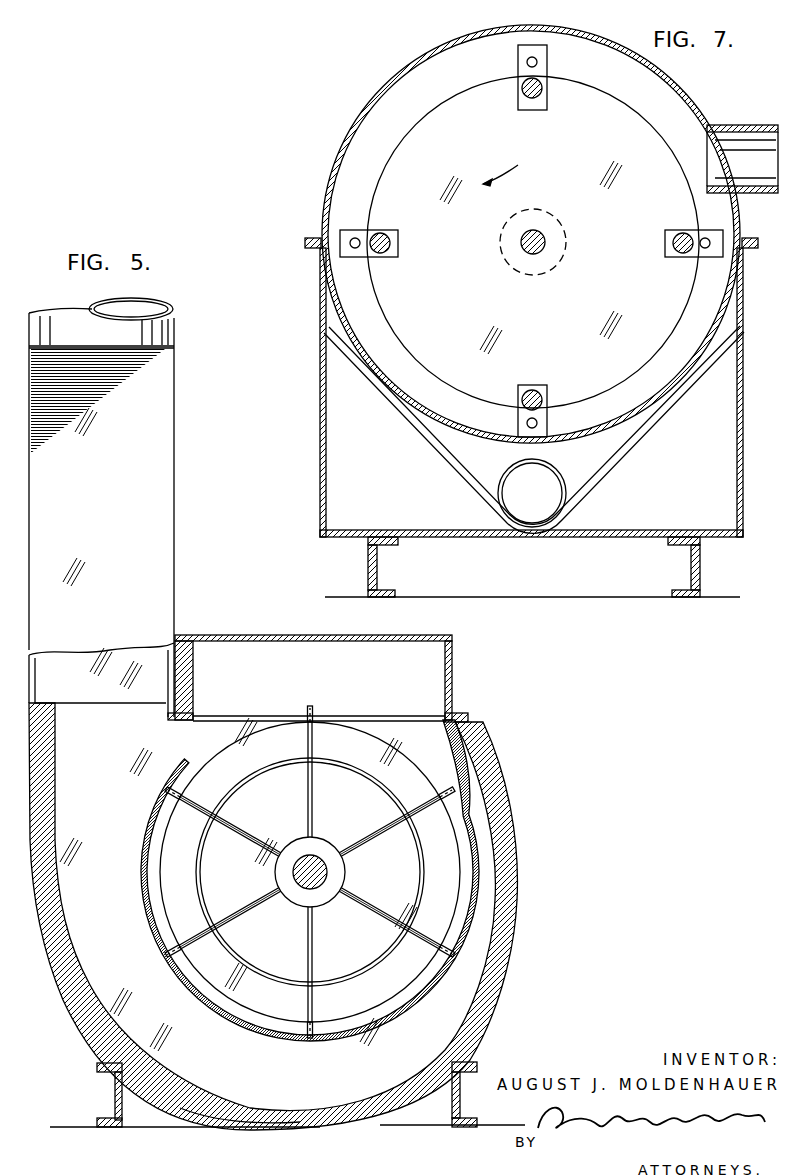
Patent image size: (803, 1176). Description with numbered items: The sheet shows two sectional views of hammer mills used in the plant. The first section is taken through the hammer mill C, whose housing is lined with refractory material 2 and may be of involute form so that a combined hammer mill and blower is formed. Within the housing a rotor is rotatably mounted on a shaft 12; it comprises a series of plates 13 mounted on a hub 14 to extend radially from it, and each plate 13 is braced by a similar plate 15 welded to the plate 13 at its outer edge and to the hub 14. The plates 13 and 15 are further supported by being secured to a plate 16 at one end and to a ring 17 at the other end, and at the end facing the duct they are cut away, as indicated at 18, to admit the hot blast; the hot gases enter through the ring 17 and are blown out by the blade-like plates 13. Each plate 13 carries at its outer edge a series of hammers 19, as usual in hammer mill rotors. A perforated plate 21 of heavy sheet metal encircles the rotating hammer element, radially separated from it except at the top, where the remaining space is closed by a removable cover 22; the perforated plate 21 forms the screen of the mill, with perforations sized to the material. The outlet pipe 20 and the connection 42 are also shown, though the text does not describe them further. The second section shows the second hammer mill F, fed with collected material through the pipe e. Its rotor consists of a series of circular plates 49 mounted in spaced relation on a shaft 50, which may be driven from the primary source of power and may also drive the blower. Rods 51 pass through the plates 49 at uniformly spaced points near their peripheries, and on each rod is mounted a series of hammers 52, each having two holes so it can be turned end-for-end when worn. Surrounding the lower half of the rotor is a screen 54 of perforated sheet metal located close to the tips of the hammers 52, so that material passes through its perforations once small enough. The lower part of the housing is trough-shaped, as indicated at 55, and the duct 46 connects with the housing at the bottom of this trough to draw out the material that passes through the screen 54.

In FIG. 5, the refractory material 2 is at (320, 1108).
In FIG. 5, the shaft 12 is at (306, 890).
In FIG. 5, the plates 13 is at (305, 818).
In FIG. 5, the hub 14 is at (330, 845).
In FIG. 5, the bracing plate 15 is at (298, 813).
In FIG. 5, the plate 16 is at (355, 782).
In FIG. 5, the ring 17 is at (242, 1000).
In FIG. 5, the cut-away portion 18 is at (335, 770).
In FIG. 5, the hammers 19 is at (318, 712).
In FIG. 5, the outlet pipe 20 is at (176, 326).
In FIG. 5, the perforated plate 21 is at (384, 1030).
In FIG. 5, the removable cover 22 is at (453, 666).
In FIG. 5, the hammer mill C is at (520, 880).
In FIG. 7, the inlet pipe 42 is at (734, 128).
In FIG. 7, the duct 46 is at (565, 486).
In FIG. 7, the circular plates 49 is at (397, 143).
In FIG. 7, the shaft 50 is at (545, 240).
In FIG. 7, the rods 51 is at (535, 100).
In FIG. 7, the hammers 52 is at (547, 62).
In FIG. 7, the screen 54 is at (458, 432).
In FIG. 7, the trough-shaped lower housing part 55 is at (410, 425).
In FIG. 7, the second hammer mill F is at (322, 181).
In FIG. 7, the pipe e is at (778, 127).